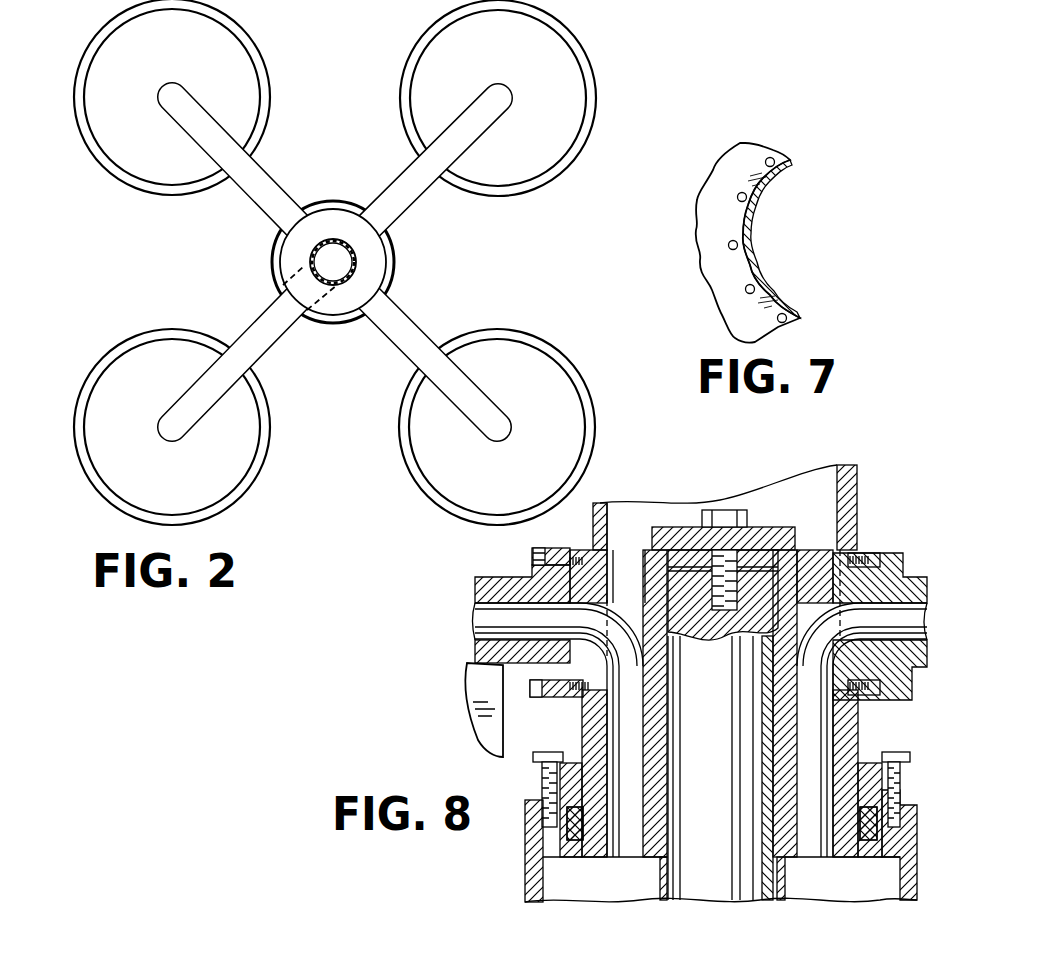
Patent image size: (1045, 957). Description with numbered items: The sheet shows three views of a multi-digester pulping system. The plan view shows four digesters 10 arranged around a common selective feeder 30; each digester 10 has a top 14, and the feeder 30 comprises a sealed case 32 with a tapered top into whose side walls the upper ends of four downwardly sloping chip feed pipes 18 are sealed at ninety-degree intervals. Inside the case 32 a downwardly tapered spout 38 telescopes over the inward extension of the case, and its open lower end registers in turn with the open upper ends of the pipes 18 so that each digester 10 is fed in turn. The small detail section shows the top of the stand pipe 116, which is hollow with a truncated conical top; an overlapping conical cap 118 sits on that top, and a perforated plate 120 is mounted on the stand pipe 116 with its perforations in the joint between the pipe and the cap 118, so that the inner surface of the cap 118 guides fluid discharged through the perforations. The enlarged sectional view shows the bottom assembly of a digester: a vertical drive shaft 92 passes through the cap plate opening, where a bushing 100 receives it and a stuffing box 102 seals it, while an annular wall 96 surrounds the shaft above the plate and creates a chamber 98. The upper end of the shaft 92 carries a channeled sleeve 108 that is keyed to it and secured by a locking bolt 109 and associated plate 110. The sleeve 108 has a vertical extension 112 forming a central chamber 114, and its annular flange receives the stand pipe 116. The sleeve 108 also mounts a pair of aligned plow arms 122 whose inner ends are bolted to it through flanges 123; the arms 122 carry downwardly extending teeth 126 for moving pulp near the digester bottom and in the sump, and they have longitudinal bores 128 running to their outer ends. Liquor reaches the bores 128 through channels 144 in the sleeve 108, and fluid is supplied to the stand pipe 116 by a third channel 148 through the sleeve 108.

In FIG. 2, the digester 10 is at (158, 193).
In FIG. 2, the top 14 is at (443, 81).
In FIG. 2, the chip feed pipe 18 is at (382, 195).
In FIG. 2, the selective feeder 30 is at (395, 252).
In FIG. 2, the sealed case 32 is at (290, 247).
In FIG. 2, the spout 38 is at (305, 267).
In FIG. 7, the stand pipe 116 is at (712, 275).
In FIG. 7, the conical cap 118 is at (740, 180).
In FIG. 7, the perforated plate 120 is at (740, 222).
In FIG. 8, the drive shaft 92 is at (722, 722).
In FIG. 8, the annular wall 96 is at (535, 856).
In FIG. 8, the chamber 98 is at (567, 882).
In FIG. 8, the bushing 100 is at (662, 883).
In FIG. 8, the stuffing box 102 is at (560, 830).
In FIG. 8, the sleeve 108 is at (852, 742).
In FIG. 8, the locking bolt 109 is at (722, 508).
In FIG. 8, the plate 110 is at (778, 528).
In FIG. 8, the vertical extension 112 is at (845, 486).
In FIG. 8, the central chamber 114 is at (688, 500).
In FIG. 8, the plow arm 122 is at (478, 652).
In FIG. 8, the flange 123 is at (886, 549).
In FIG. 8, the teeth 126 is at (473, 726).
In FIG. 8, the longitudinal bore 128 is at (493, 628).
In FIG. 8, the channel 144 is at (627, 725).
In FIG. 8, the channel 148 is at (632, 558).